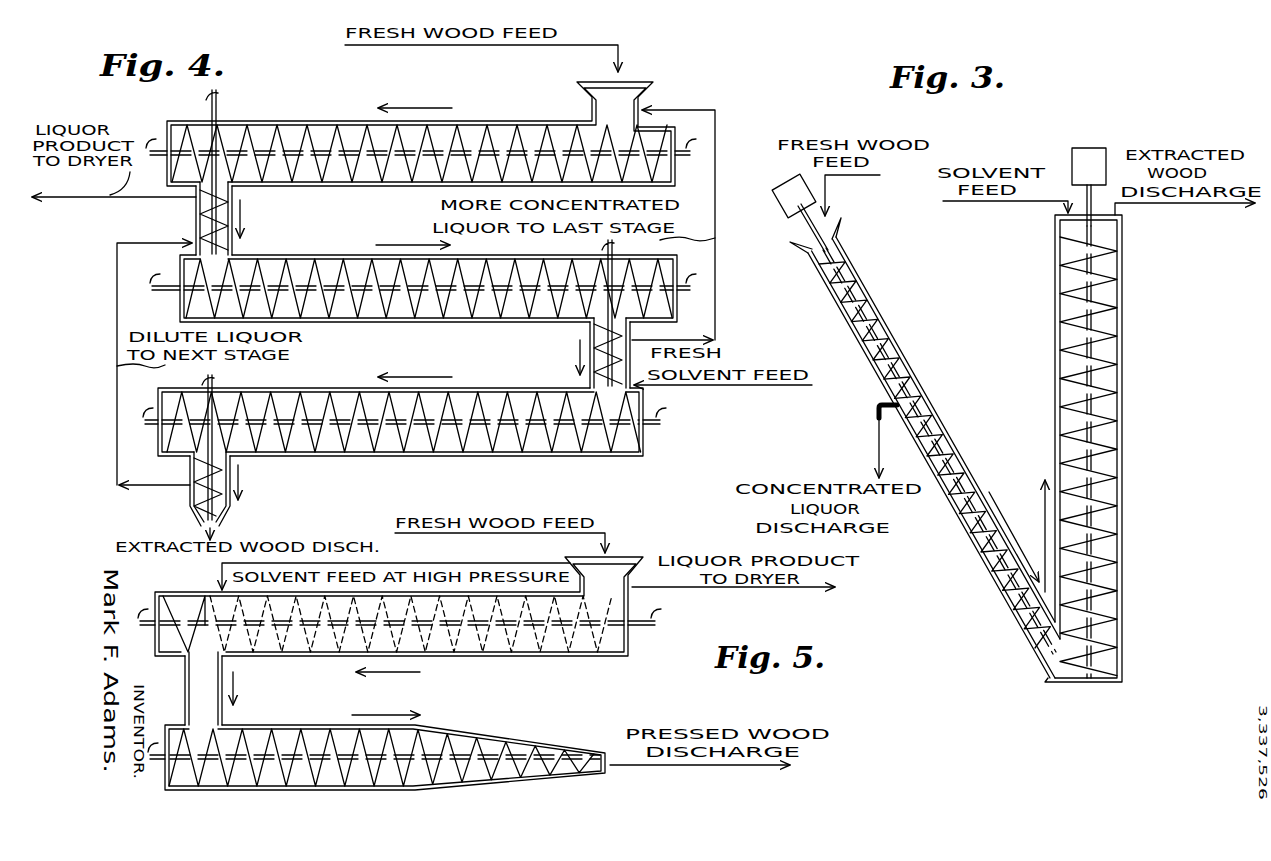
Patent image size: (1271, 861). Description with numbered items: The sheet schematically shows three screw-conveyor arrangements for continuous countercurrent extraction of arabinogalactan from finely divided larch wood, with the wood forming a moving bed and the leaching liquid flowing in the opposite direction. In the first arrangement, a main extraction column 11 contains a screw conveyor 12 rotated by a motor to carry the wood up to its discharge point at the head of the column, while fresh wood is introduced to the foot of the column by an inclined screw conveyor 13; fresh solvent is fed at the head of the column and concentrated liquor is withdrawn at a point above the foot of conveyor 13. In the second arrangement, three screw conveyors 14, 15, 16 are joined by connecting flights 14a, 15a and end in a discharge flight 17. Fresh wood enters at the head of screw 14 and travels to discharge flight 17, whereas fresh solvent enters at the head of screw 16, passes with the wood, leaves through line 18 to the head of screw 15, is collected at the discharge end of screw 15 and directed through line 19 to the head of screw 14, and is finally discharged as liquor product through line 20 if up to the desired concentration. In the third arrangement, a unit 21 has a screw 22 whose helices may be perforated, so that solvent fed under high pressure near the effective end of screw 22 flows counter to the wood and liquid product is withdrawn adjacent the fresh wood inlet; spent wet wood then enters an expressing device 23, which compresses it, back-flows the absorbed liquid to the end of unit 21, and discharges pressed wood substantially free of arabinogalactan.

In FIG. 3, the main extraction column 11 is at (1123, 397).
In FIG. 3, the screw conveyor 12 is at (1123, 263).
In FIG. 3, the screw conveyor 13 is at (884, 318).
In FIG. 4, the screw conveyor 14 is at (290, 120).
In FIG. 4, the connecting flight 14a is at (194, 217).
In FIG. 4, the screw conveyor 15 is at (394, 328).
In FIG. 4, the connecting flight 15a is at (588, 352).
In FIG. 4, the screw conveyor 16 is at (492, 458).
In FIG. 4, the discharge flight 17 is at (190, 512).
In FIG. 4, the line 18 is at (116, 448).
In FIG. 4, the line 19 is at (716, 312).
In FIG. 4, the line 20 is at (66, 198).
In FIG. 5, the unit 21 is at (522, 660).
In FIG. 5, the screw 22 is at (575, 652).
In FIG. 5, the expressing device 23 is at (305, 792).